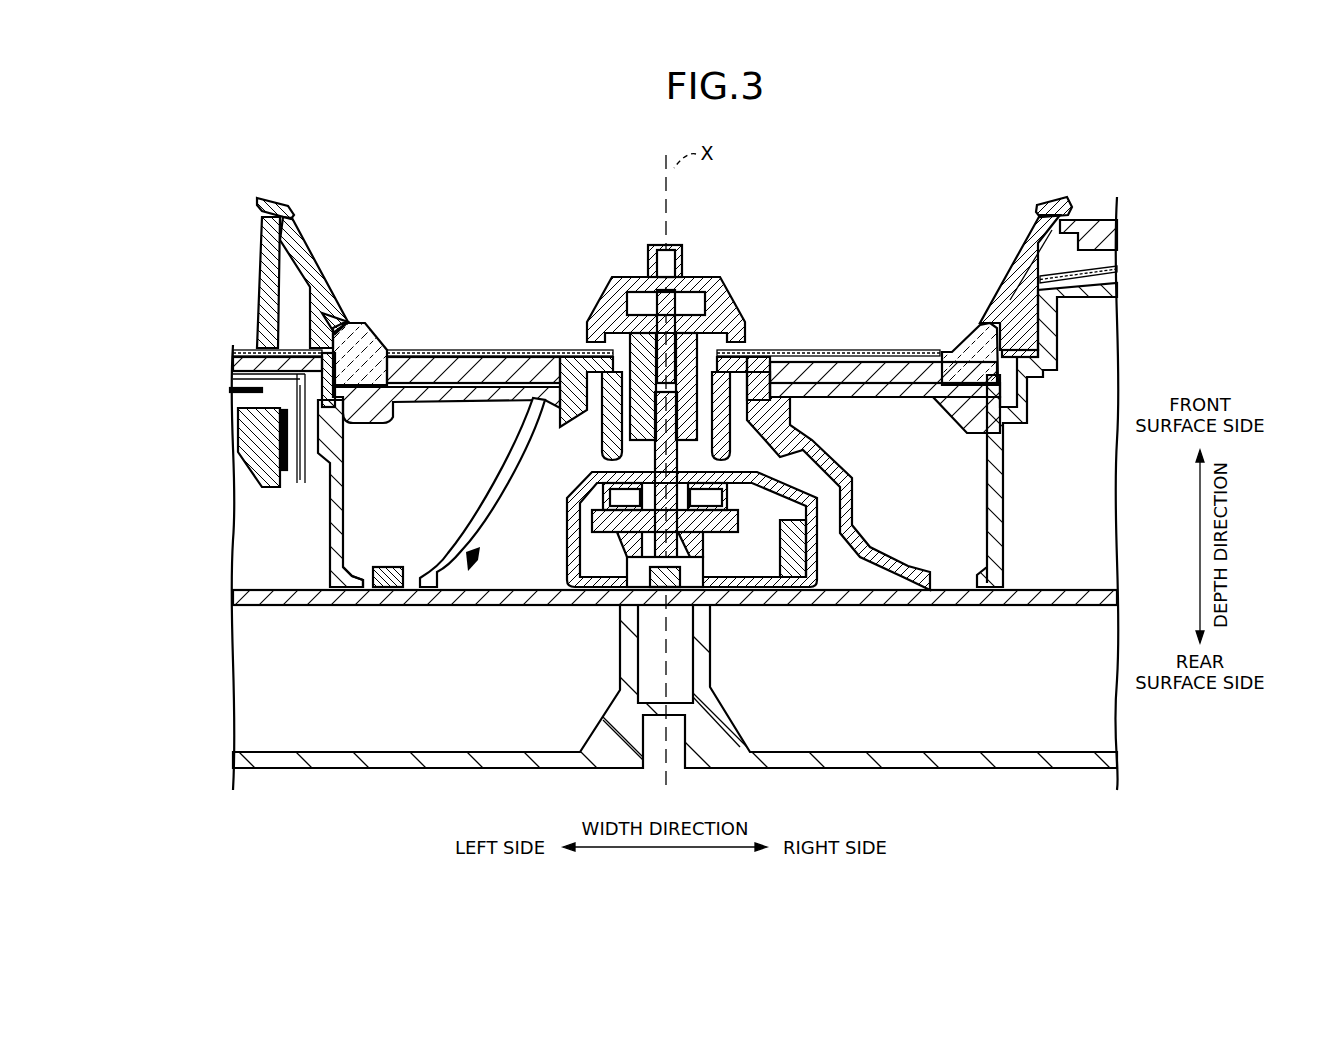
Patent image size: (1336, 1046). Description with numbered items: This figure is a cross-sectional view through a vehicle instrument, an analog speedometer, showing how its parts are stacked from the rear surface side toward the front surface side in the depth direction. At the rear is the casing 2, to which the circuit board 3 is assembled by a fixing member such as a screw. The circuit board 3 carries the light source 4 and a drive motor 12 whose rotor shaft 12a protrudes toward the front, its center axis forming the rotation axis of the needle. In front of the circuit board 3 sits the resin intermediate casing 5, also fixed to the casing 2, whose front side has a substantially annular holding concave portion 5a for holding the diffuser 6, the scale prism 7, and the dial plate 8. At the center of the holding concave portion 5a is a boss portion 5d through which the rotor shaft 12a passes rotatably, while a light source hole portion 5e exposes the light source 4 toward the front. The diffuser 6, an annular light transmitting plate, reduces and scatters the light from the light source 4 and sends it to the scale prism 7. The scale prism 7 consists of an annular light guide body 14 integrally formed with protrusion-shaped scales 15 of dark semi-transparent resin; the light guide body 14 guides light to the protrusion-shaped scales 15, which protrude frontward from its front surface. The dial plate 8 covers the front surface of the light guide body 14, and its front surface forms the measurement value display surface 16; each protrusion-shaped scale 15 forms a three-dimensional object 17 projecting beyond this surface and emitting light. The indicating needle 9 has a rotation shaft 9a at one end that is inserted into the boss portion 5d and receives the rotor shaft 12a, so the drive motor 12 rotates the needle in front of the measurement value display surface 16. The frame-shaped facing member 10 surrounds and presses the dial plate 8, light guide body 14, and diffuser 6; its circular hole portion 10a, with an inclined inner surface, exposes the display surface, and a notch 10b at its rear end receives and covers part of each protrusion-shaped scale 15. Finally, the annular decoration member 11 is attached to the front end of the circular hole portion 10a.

The casing 2 is at (1040, 732).
The circuit board 3 is at (1062, 585).
The light source 4 is at (390, 565).
The intermediate casing 5 is at (1010, 487).
The holding concave portion 5a is at (983, 512).
The boss portion 5d is at (600, 433).
The light source hole portion 5e is at (370, 605).
The diffuser 6 is at (460, 408).
The scale prism 7 is at (542, 252).
The dial plate 8 is at (893, 346).
The indicating needle 9 is at (676, 237).
The rotation shaft 9a is at (655, 267).
The facing member 10 is at (255, 290).
The circular hole portion 10a is at (300, 246).
The notch 10b is at (327, 338).
The annular decoration member 11 is at (281, 193).
The drive motor 12 is at (815, 560).
The rotor shaft 12a is at (700, 447).
The light guide body 14 is at (510, 348).
The protrusion-shaped scale 15 is at (365, 350).
The measurement value display surface 16 is at (847, 350).
The three-dimensional object 17 is at (963, 340).